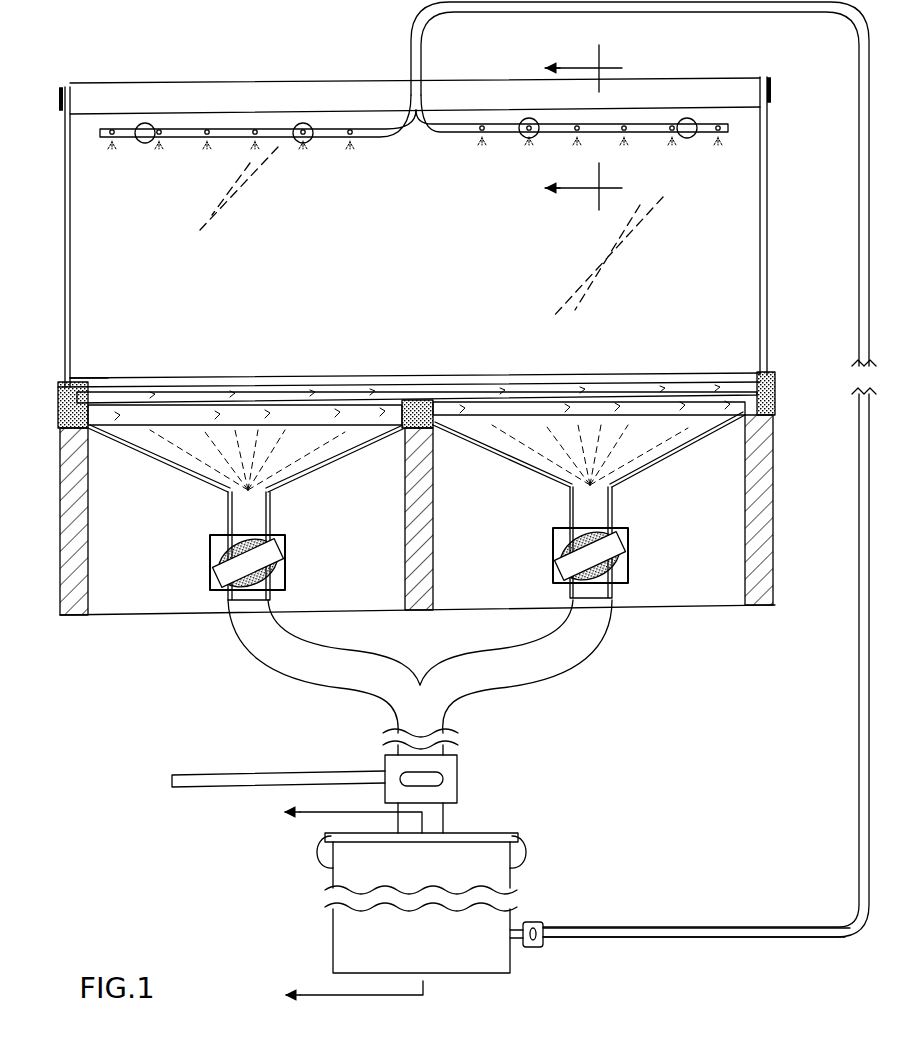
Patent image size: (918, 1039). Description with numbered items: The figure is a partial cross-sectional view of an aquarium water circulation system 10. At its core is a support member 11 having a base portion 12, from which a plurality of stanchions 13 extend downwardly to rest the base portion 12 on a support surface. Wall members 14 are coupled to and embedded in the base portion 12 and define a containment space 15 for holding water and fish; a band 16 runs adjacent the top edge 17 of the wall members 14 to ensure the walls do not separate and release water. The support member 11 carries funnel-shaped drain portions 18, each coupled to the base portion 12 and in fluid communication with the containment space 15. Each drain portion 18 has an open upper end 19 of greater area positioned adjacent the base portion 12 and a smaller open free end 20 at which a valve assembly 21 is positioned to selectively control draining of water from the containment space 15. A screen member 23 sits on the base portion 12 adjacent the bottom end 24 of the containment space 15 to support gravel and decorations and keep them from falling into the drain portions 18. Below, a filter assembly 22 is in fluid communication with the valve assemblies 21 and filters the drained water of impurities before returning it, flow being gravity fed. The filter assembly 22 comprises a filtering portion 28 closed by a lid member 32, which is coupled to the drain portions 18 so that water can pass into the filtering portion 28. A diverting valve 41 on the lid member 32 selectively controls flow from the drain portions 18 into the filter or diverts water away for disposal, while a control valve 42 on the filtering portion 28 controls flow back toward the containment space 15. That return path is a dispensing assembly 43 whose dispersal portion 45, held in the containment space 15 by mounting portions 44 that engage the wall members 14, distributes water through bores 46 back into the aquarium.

The aquarium water circulation system 10 is at (786, 142).
The support member 11 is at (790, 337).
The base portion 12 is at (797, 383).
The stanchions 13 is at (66, 592).
The wall members 14 is at (88, 152).
The containment space 15 is at (378, 334).
The band 16 is at (60, 103).
The top edge 17 is at (188, 83).
The drain portions 18 is at (154, 460).
The open upper end 19 is at (125, 428).
The open free end 20 is at (228, 497).
The valve assembly 21 is at (300, 596).
The filter assembly 22 is at (540, 800).
The screen member 23 is at (700, 375).
The bottom end 24 is at (108, 378).
The filtering portion 28 is at (512, 877).
The lid member 32 is at (478, 830).
The diverting valve 41 is at (450, 762).
The control valve 42 is at (545, 922).
The dispensing assembly 43 is at (369, 70).
The mounting portions 44 is at (143, 128).
The dispersal portion 45 is at (437, 125).
The bores 46 is at (255, 130).